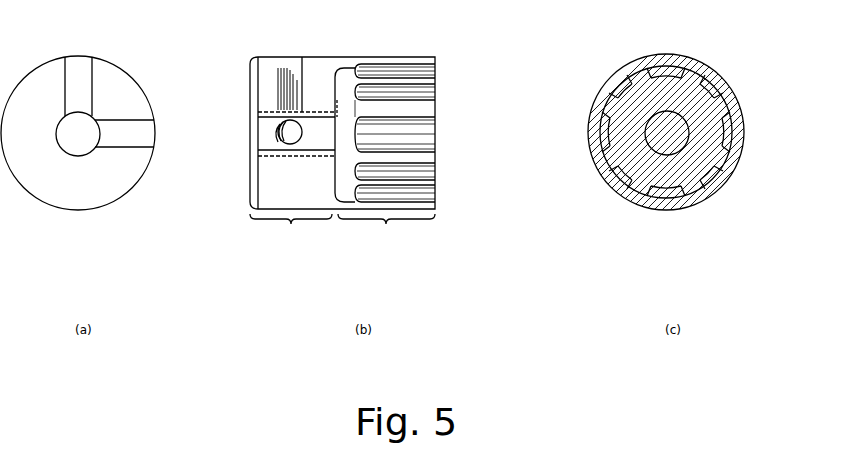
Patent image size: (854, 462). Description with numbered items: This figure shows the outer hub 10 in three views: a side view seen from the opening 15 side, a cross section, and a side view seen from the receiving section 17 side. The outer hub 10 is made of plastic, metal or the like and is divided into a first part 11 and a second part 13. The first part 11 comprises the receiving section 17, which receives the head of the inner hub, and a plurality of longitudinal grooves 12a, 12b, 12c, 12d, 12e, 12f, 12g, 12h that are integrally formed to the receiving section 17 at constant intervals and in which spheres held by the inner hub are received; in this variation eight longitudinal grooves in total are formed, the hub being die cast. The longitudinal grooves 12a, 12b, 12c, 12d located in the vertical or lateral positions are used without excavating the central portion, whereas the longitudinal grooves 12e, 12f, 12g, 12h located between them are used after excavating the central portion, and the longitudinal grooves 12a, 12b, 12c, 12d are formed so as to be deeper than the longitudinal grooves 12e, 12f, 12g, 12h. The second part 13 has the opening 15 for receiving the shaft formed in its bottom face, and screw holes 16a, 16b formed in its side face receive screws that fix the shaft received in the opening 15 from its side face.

The outer hub 10 is at (134, 63).
The first part 11 is at (386, 230).
The longitudinal groove 12a is at (433, 73).
The longitudinal groove 12b is at (433, 137).
The longitudinal groove 12c is at (433, 196).
The longitudinal groove 12d is at (590, 125).
The longitudinal groove 12e is at (433, 93).
The longitudinal groove 12f is at (433, 173).
The longitudinal groove 12g is at (607, 182).
The longitudinal groove 12h is at (622, 72).
The second part 13 is at (291, 230).
The opening 15 is at (79, 114).
The screw hole 16a is at (70, 59).
The screw hole 16b is at (147, 142).
The receiving section 17 is at (433, 109).